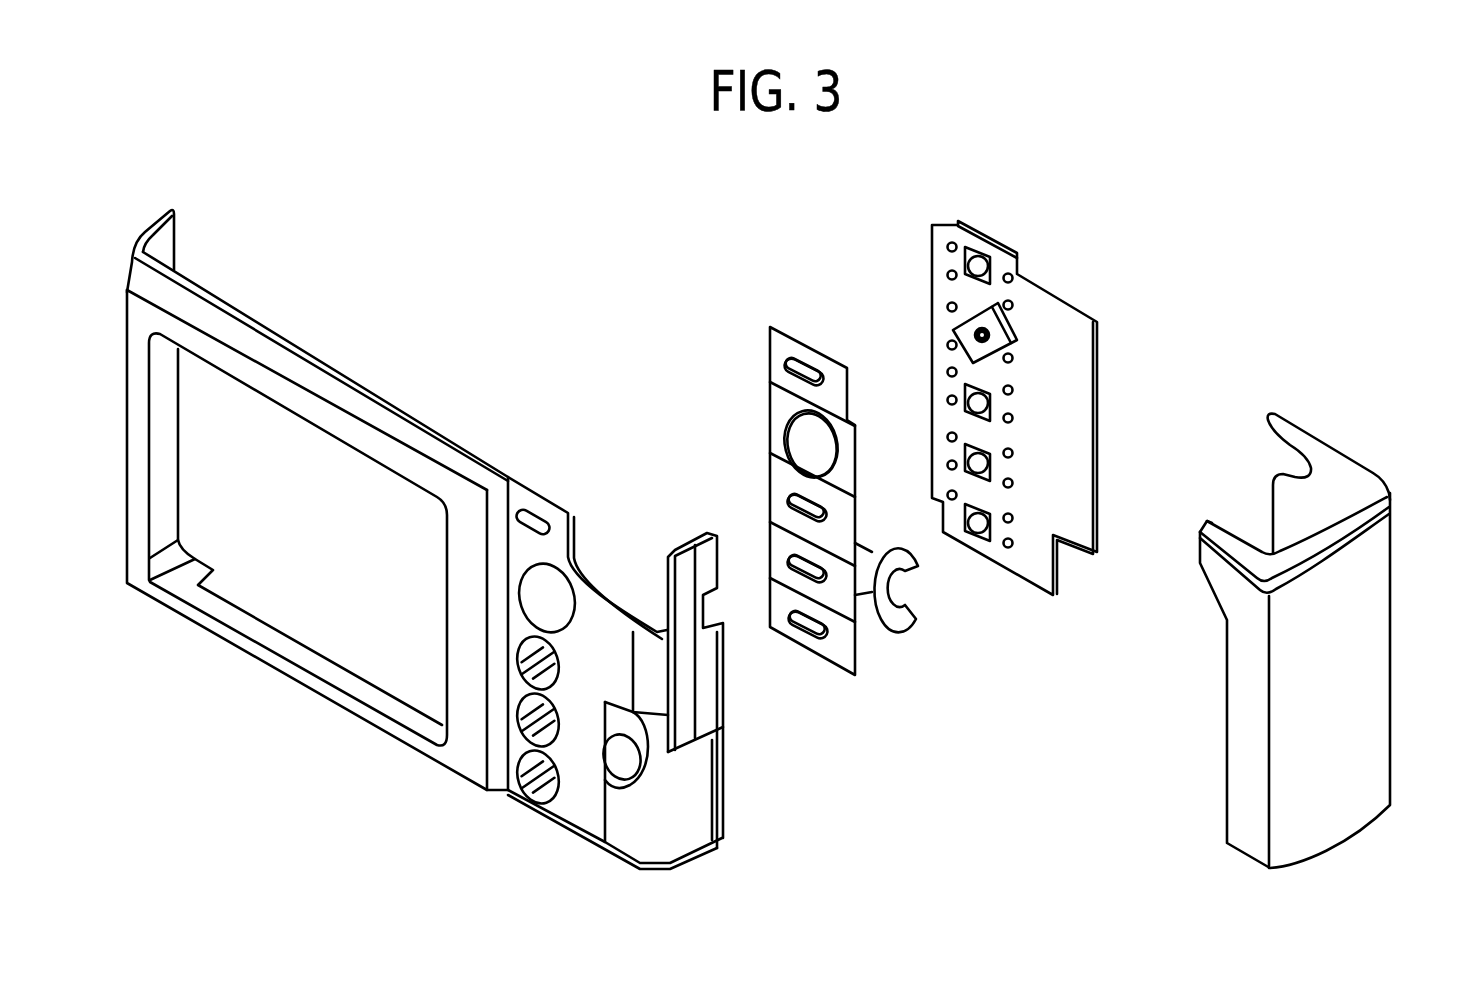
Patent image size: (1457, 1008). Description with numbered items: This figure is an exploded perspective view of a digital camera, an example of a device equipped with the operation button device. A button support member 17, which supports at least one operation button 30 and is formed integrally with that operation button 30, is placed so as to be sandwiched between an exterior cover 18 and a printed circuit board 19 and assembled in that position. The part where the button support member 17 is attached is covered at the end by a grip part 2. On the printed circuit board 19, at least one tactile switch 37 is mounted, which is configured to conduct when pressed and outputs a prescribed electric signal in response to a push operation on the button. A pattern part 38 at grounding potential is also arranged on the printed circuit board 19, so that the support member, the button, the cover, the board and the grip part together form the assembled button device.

The grip part 2 is at (1373, 697).
The button support member 17 is at (815, 500).
The exterior cover 18 is at (325, 385).
The printed circuit board 19 is at (1014, 408).
The operation button 30 is at (803, 633).
The switch 37 is at (964, 524).
The pattern part 38 is at (1013, 518).